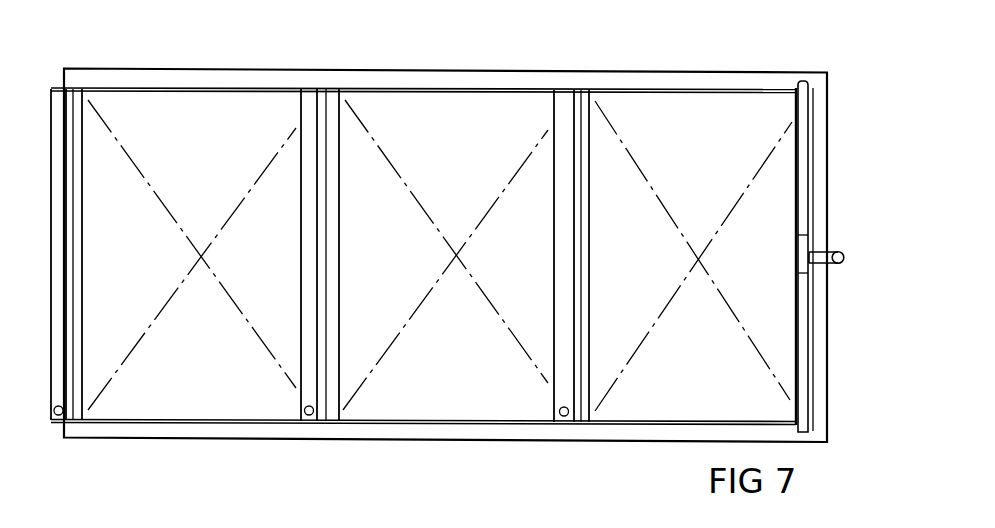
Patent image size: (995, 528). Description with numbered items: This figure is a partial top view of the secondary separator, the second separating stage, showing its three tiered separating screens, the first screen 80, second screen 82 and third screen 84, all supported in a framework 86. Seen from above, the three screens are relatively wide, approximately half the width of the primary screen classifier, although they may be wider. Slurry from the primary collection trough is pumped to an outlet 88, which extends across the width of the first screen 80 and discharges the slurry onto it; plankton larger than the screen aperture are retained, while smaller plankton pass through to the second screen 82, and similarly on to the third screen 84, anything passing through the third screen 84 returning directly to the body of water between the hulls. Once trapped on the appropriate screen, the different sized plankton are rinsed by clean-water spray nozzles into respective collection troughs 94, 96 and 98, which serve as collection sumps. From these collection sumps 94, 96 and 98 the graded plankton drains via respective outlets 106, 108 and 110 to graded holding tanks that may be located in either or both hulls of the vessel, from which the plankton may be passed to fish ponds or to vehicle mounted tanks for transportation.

The first screen 80 is at (714, 166).
The second screen 82 is at (464, 172).
The third screen 84 is at (208, 176).
The framework 86 is at (138, 430).
The outlet 88 is at (817, 371).
The collection trough 94 is at (562, 108).
The collection trough 96 is at (312, 100).
The collection trough 98 is at (61, 100).
The outlet 106 is at (562, 428).
The outlet 108 is at (312, 426).
The outlet 110 is at (58, 419).